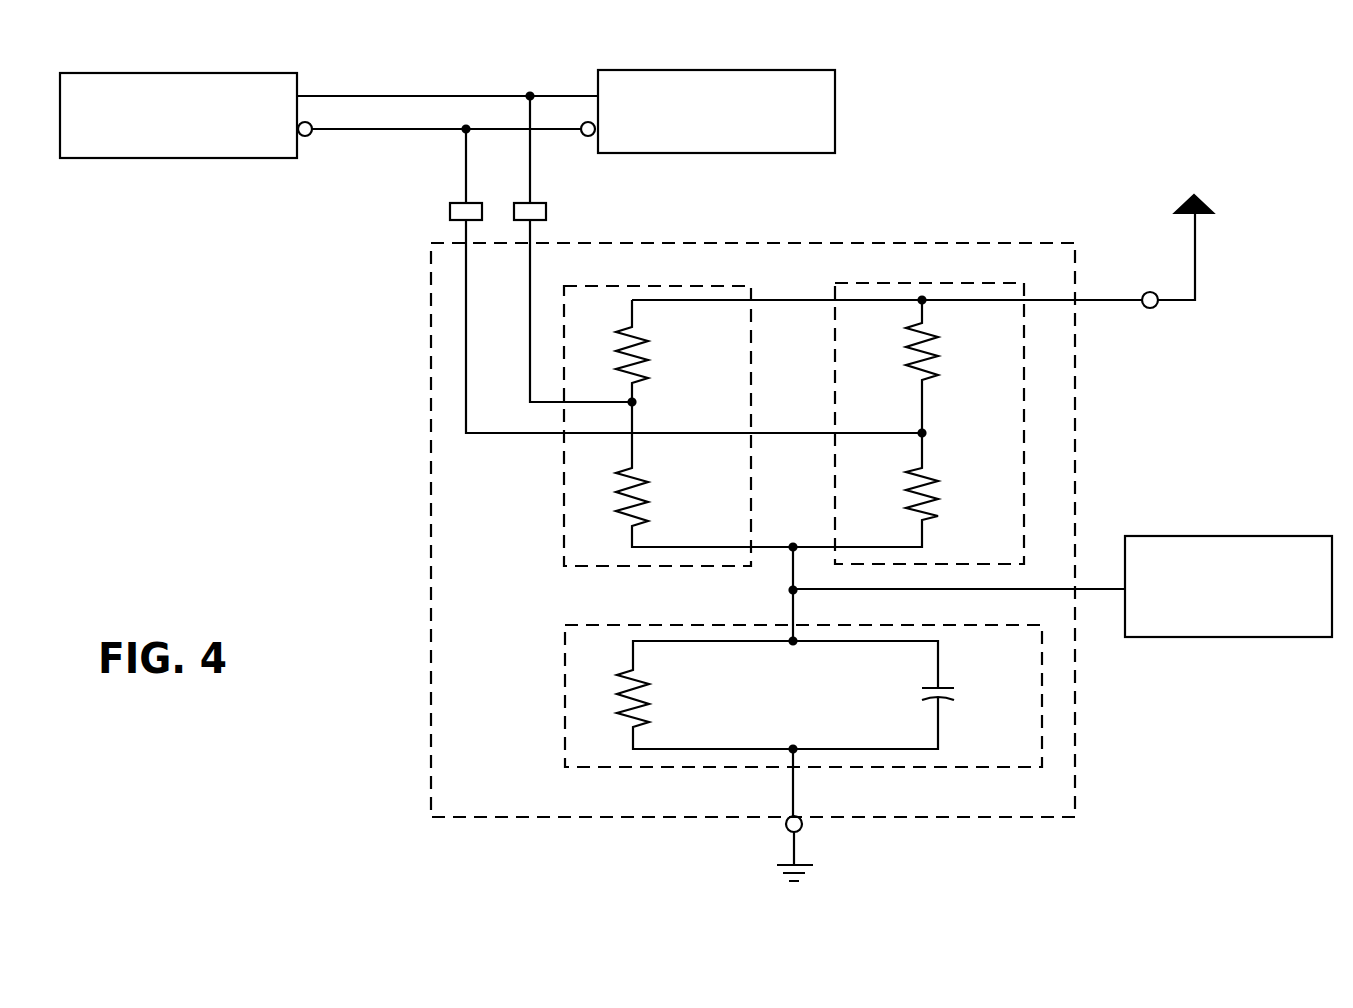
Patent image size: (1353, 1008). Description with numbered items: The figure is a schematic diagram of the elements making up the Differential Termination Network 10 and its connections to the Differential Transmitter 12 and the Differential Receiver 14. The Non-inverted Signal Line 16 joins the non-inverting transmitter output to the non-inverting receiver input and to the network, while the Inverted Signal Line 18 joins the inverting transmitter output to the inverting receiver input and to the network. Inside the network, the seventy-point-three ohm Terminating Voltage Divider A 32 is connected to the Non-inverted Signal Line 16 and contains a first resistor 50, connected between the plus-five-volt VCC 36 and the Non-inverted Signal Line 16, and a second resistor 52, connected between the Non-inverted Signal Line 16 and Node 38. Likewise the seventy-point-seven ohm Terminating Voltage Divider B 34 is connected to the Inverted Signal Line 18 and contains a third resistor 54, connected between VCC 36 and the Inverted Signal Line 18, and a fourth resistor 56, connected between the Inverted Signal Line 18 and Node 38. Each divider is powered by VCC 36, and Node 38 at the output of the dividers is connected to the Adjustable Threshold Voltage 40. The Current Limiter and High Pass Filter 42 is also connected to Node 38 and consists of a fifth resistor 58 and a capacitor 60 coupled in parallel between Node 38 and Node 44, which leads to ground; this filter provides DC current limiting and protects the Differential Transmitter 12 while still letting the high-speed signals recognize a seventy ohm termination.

The Differential Termination Network 10 is at (865, 241).
The Differential Transmitter 12 is at (235, 158).
The Differential Receiver 14 is at (702, 148).
The Non-inverted Signal Line 16 is at (437, 96).
The Inverted Signal Line 18 is at (380, 132).
The Terminating Voltage Divider A 32 is at (564, 487).
The Terminating Voltage Divider B 34 is at (832, 393).
The VCC 36 is at (922, 300).
The Node 38 is at (793, 590).
The Adjustable Threshold Voltage 40 is at (1195, 537).
The Current Limiter and High Pass Filter 42 is at (565, 673).
The Node 44 is at (800, 818).
The Resistor R1 50 is at (648, 360).
The Resistor R2 52 is at (648, 490).
The Resistor R3 54 is at (938, 356).
The Resistor R4 56 is at (938, 484).
The Resistor R5 58 is at (649, 700).
The Capacitor C1 60 is at (954, 694).